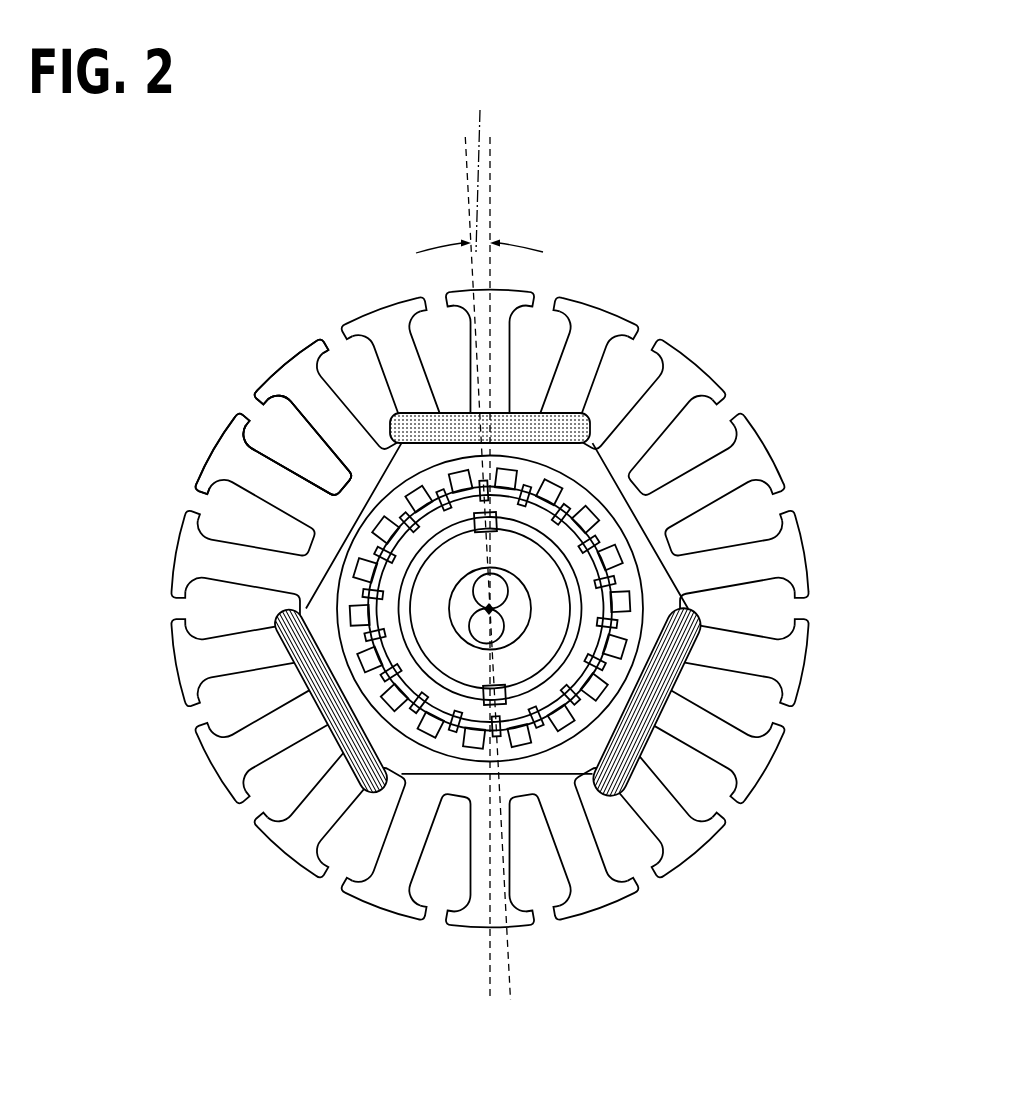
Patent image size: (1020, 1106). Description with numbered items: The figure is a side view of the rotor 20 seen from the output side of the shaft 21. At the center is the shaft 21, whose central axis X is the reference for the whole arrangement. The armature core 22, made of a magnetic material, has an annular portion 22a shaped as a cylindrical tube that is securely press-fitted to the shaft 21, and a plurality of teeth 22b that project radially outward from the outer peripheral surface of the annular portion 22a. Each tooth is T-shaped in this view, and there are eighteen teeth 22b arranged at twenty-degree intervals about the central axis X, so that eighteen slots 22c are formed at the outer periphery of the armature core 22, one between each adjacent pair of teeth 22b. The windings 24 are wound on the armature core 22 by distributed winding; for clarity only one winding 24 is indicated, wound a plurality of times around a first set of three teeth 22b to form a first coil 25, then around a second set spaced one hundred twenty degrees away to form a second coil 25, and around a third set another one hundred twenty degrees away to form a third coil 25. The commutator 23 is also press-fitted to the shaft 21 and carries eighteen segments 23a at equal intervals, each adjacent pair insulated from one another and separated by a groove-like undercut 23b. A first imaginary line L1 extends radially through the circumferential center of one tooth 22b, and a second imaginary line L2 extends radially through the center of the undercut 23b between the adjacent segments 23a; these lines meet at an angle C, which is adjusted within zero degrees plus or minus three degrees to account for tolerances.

The rotor 20 is at (449, 601).
The shaft 21 is at (532, 608).
The armature core 22 is at (714, 361).
The annular portion 22a is at (345, 518).
The teeth 22b is at (284, 361).
The slots 22c is at (267, 452).
The commutator 23 is at (462, 595).
The segments 23a is at (390, 553).
The undercut 23b is at (404, 497).
The winding 24 is at (585, 413).
The coil 25 is at (560, 418).
The angle C is at (481, 168).
The first imaginary line L1 is at (500, 186).
The second imaginary line L2 is at (466, 186).
The central axis X is at (492, 612).